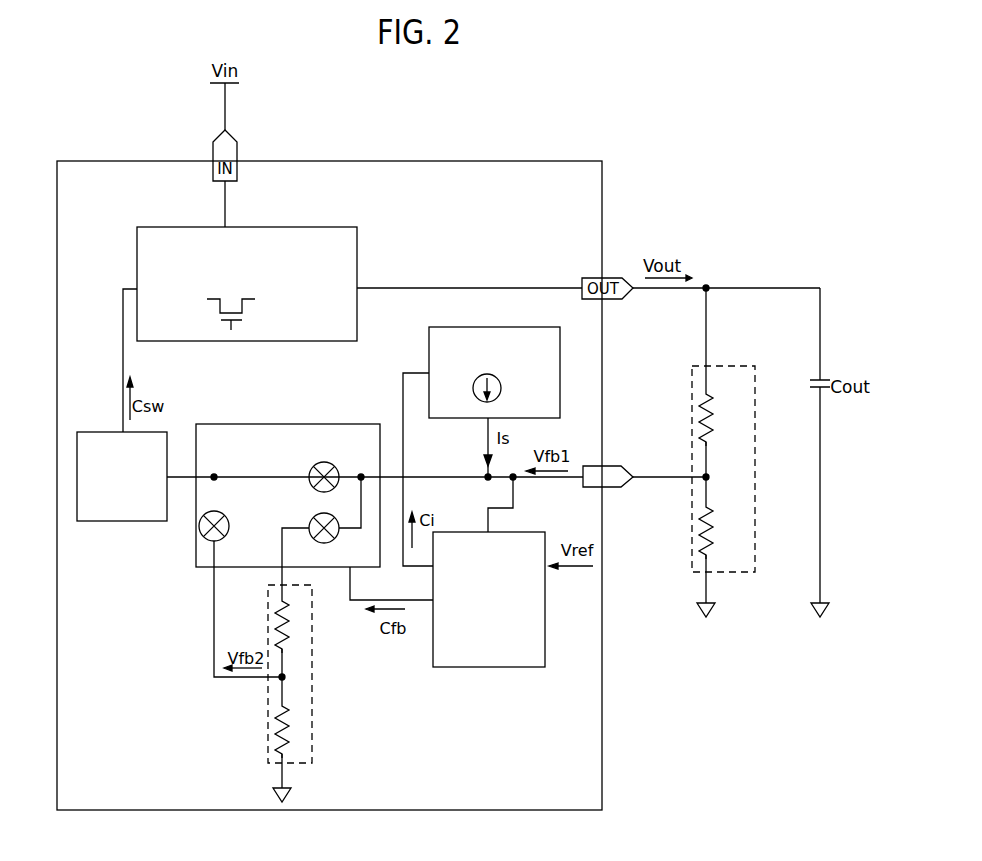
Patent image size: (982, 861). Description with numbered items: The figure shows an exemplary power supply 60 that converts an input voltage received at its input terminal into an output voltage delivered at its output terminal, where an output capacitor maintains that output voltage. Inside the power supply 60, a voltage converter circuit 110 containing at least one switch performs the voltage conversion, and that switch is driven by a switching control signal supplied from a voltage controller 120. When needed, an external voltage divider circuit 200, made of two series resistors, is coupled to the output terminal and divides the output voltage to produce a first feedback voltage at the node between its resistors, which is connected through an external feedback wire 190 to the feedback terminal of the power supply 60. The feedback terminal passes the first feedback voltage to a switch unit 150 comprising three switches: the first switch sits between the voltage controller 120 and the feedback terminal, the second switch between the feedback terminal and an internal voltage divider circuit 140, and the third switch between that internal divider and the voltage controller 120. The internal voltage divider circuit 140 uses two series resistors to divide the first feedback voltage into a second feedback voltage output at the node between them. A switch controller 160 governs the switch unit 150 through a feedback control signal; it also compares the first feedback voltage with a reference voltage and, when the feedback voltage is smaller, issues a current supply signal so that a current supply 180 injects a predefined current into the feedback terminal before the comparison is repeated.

The power supply 60 is at (362, 161).
The voltage converter circuit 110 is at (358, 252).
The voltage controller 120 is at (130, 522).
The internal voltage divider circuit 140 is at (312, 697).
The switch unit 150 is at (322, 424).
The switch controller 160 is at (488, 667).
The current supply 180 is at (429, 334).
The external feedback wire 190 is at (673, 481).
The external voltage divider circuit 200 is at (755, 512).